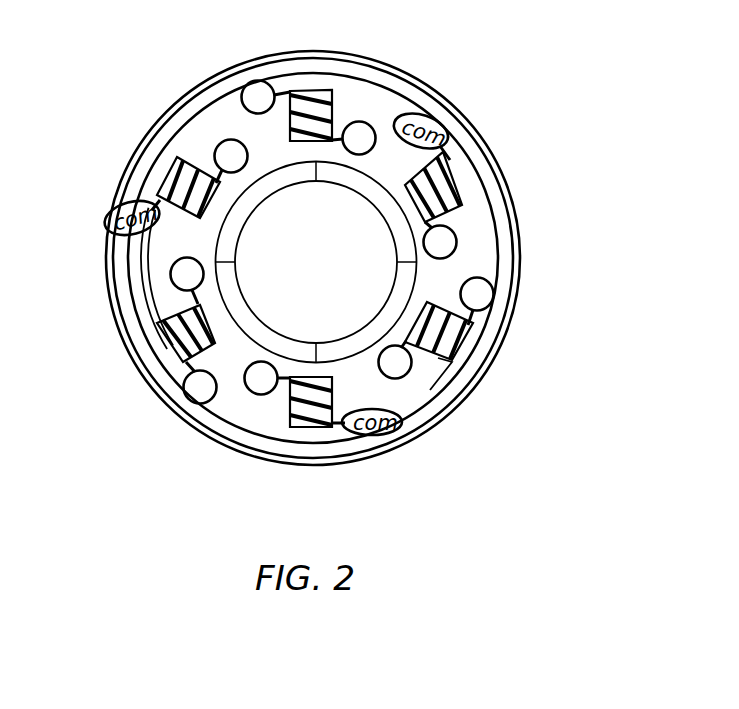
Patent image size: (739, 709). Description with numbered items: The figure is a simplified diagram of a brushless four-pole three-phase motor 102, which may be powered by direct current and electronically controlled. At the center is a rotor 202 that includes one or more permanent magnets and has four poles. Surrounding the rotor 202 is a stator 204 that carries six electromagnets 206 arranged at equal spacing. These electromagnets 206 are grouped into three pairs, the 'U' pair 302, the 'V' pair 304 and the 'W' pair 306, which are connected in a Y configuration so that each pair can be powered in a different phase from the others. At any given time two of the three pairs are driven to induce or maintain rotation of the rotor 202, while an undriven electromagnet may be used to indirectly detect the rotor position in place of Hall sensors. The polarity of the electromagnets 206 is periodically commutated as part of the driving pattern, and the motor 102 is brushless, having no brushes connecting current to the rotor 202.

The brushless four-pole three-phase motor 102 is at (502, 88).
The rotor 202 is at (352, 343).
The stator 204 is at (520, 268).
The electromagnets 206 is at (322, 108).
The 'U' pair of electromagnets 302 is at (257, 80).
The 'V' pair of electromagnets 304 is at (457, 238).
The 'W' pair of electromagnets 306 is at (220, 144).